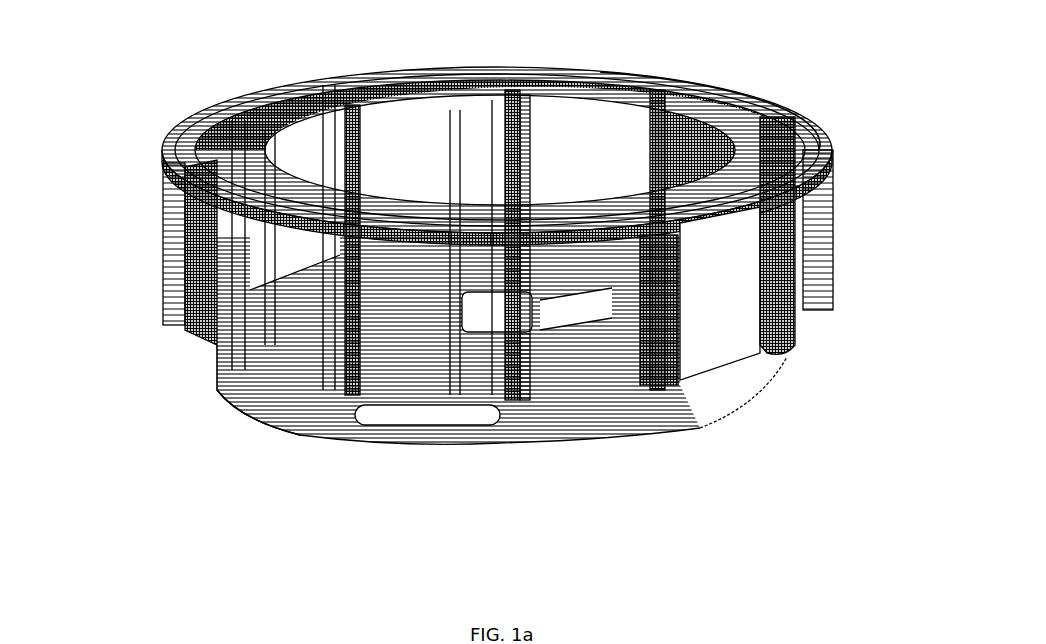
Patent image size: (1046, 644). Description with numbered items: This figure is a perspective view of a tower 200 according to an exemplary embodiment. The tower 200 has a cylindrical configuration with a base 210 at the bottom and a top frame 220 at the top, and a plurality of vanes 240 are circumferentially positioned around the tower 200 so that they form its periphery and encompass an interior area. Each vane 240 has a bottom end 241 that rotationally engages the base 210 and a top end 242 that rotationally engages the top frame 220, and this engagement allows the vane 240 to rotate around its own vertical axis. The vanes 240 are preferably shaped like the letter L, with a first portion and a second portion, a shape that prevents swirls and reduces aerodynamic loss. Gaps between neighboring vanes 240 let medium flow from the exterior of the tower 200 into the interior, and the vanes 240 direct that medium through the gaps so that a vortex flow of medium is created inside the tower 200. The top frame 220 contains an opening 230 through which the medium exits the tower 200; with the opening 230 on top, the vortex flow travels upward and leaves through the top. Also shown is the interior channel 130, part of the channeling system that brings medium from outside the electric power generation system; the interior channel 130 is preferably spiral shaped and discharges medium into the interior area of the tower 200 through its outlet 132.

The tower 200 is at (745, 88).
The top frame 220 is at (787, 108).
The opening 230 is at (817, 128).
The top end 242 is at (790, 202).
The vane 240 is at (717, 288).
The bottom end 241 is at (717, 362).
The base 210 is at (705, 402).
The interior channel 130 is at (215, 348).
The outlet 132 is at (227, 403).